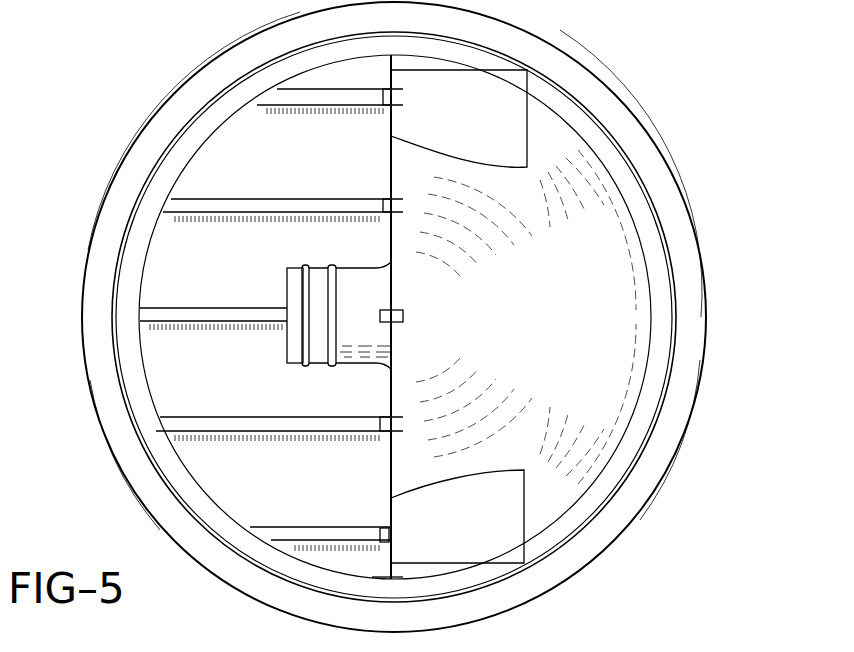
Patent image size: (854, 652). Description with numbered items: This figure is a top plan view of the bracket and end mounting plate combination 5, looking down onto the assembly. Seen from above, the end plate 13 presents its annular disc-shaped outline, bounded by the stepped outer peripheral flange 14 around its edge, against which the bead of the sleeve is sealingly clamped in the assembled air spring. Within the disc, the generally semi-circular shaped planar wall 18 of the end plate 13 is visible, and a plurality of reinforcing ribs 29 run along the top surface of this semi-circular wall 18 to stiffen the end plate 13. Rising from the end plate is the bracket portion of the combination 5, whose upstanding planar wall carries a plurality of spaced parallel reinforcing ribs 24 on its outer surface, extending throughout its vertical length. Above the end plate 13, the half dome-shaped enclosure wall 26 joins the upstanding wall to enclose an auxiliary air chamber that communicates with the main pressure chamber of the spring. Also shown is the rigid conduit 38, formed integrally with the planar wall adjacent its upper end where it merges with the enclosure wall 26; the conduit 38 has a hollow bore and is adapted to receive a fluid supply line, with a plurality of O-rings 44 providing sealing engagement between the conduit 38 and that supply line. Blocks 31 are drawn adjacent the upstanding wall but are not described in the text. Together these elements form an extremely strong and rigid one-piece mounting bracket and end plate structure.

The bracket and end mounting plate combination 5 is at (690, 122).
The end plate 13 is at (203, 158).
The stepped outer peripheral flange 14 is at (122, 190).
The semi-circular shaped planar wall 18 is at (173, 258).
The reinforcing ribs 24 is at (377, 205).
The half dome-shaped enclosure wall 26 is at (618, 352).
The reinforcing ribs 29 is at (336, 101).
The block 31 is at (498, 82).
The rigid conduit 38 is at (293, 363).
The O-rings 44 is at (307, 267).